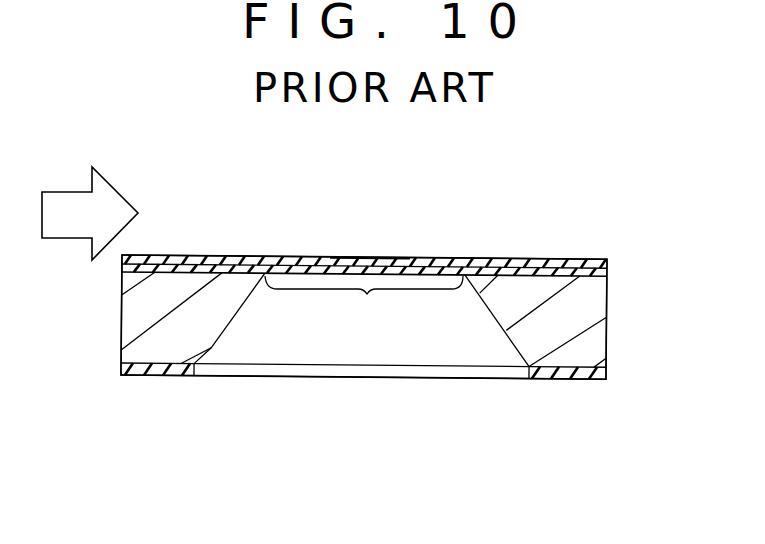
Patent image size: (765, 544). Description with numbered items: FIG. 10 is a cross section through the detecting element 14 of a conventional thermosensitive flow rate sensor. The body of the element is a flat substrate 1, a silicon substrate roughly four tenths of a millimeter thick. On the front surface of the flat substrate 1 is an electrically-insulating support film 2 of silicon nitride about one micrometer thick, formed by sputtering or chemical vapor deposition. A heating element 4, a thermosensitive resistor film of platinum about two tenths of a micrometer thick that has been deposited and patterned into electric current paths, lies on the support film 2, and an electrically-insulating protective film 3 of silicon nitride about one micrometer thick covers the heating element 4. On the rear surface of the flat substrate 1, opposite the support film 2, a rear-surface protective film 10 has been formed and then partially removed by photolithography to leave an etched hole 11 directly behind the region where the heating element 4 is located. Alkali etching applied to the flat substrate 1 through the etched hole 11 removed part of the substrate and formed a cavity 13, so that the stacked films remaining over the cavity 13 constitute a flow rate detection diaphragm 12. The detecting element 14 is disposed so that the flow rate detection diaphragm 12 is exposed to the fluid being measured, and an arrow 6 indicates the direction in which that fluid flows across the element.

The flat substrate 1 is at (600, 295).
The support film 2 is at (498, 262).
The protective film 3 is at (458, 262).
The heating element 4 is at (372, 258).
The arrow 6 is at (53, 232).
The rear-surface protective film 10 is at (158, 377).
The etched hole 11 is at (238, 375).
The flow rate detection diaphragm 12 is at (364, 301).
The cavity 13 is at (458, 355).
The detecting element 14 is at (611, 220).